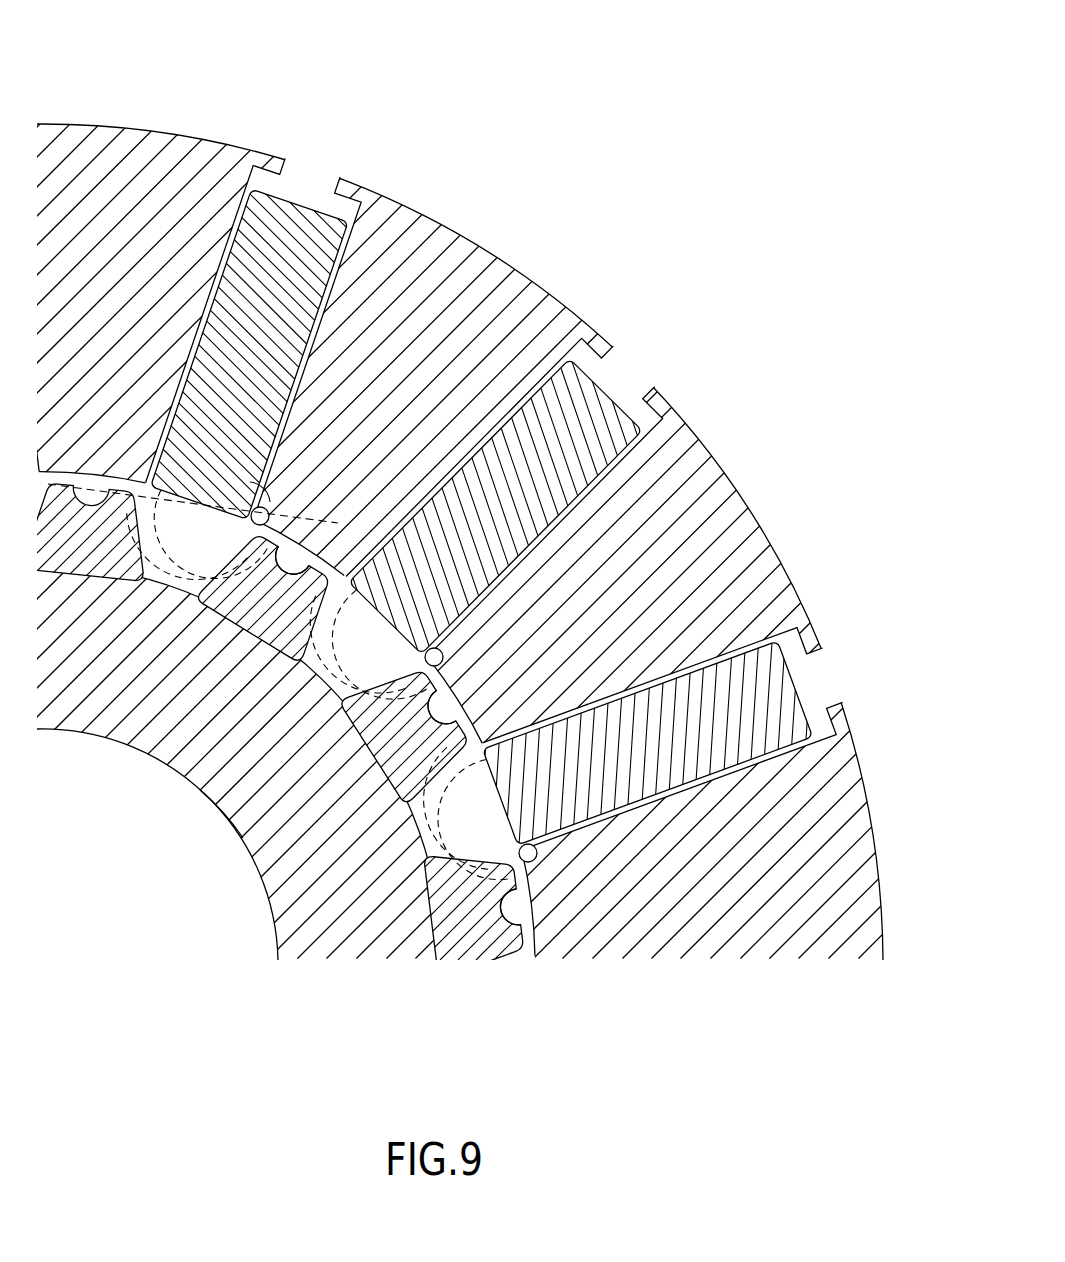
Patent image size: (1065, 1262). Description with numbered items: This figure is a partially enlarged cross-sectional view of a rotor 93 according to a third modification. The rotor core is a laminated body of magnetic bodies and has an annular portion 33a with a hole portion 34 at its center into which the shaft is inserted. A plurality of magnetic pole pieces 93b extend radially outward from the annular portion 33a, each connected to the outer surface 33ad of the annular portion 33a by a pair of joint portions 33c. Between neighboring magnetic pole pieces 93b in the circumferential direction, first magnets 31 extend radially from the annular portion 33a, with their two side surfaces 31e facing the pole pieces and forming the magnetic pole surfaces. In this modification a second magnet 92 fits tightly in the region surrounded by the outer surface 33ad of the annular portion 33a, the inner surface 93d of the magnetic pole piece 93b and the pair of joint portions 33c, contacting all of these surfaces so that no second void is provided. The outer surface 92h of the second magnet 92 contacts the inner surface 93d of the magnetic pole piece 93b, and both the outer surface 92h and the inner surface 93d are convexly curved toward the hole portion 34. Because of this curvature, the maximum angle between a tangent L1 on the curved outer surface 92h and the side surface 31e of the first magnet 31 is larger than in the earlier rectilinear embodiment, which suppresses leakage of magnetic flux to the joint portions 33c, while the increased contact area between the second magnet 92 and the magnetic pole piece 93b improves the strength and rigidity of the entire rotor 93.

The rotor 93 is at (556, 120).
The magnetic pole piece 93b is at (140, 160).
The first magnet 31 is at (300, 215).
The side surface 31e is at (215, 245).
The joint portion 33c is at (130, 502).
The inner surface 93d is at (220, 618).
The second magnet 92 is at (472, 960).
The outer surface 92h is at (315, 655).
The annular portion 33a is at (348, 925).
The outer surface 33ad is at (235, 795).
The hole portion 34 is at (250, 853).
The tangent L1 is at (211, 509).